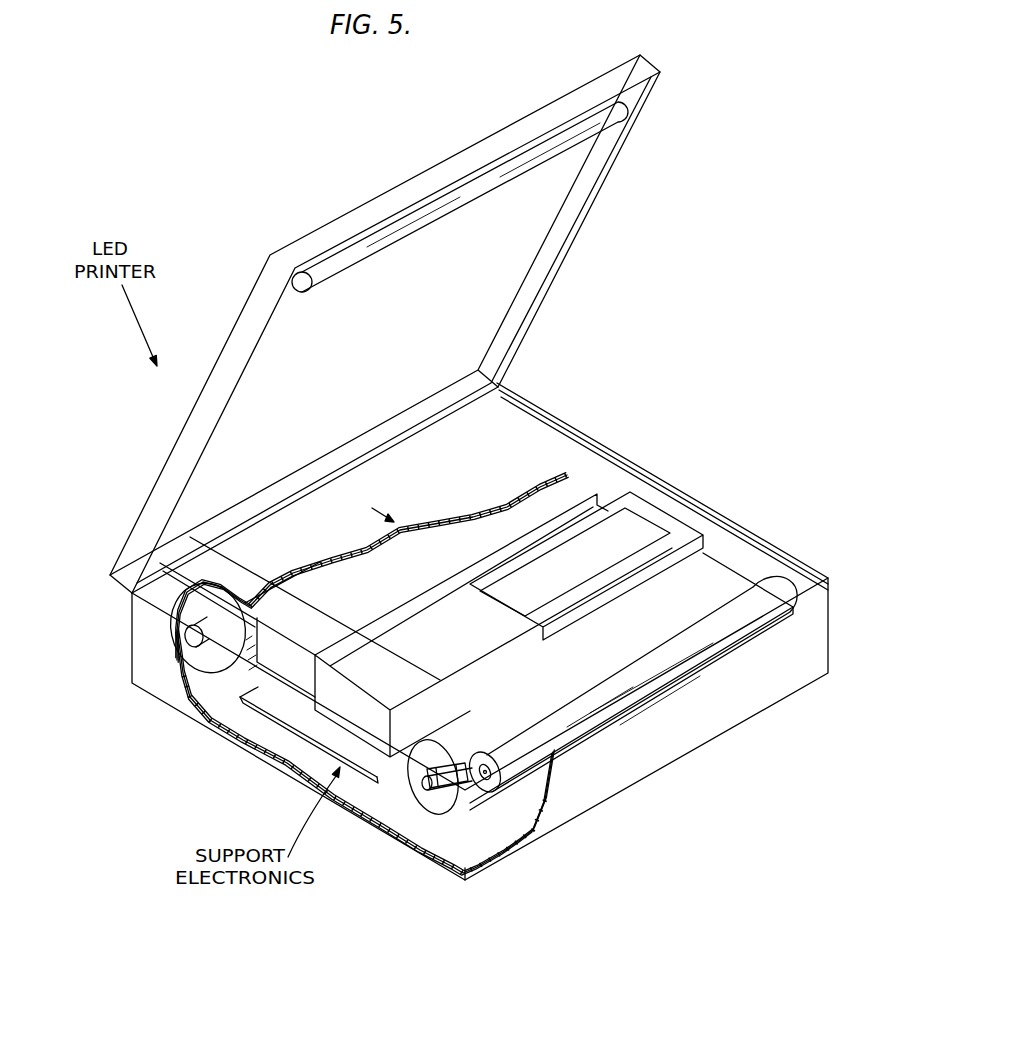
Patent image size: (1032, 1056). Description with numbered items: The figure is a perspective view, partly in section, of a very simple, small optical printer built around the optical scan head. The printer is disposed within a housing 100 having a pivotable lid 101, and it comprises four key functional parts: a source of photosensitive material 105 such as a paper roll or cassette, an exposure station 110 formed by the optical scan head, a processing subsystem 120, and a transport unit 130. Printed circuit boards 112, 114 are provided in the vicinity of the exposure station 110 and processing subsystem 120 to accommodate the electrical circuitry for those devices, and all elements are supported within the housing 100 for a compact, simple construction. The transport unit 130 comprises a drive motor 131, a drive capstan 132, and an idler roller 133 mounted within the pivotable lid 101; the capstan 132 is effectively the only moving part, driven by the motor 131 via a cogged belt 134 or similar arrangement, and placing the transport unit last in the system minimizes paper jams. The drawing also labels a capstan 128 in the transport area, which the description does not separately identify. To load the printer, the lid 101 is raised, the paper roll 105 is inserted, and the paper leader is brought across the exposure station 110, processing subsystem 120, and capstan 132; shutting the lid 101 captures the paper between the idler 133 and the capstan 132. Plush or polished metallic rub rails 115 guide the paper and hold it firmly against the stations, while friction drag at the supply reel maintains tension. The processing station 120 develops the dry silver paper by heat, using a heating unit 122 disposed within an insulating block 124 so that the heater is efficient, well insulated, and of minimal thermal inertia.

The housing 100 is at (828, 640).
The pivotable lid 101 is at (643, 66).
The source of photosensitive material 105 is at (220, 652).
The exposure station 110 is at (573, 470).
The printed circuit board 112 is at (267, 693).
The printed circuit board 114 is at (273, 725).
The rub rails 115 is at (287, 603).
The processing subsystem 120 is at (627, 506).
The heating unit 122 is at (647, 533).
The insulating block 124 is at (647, 507).
The capstan 128 is at (700, 572).
The transport unit 130 is at (752, 561).
The drive motor 131 is at (448, 808).
The drive capstan 132 is at (778, 606).
The idler roller 133 is at (622, 113).
The cogged belt 134 is at (440, 790).